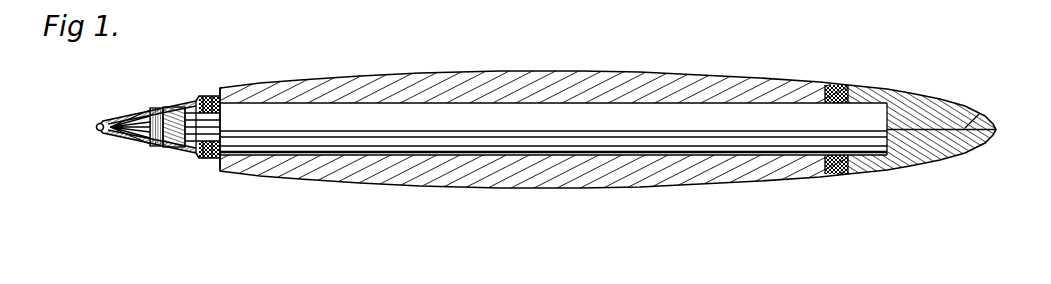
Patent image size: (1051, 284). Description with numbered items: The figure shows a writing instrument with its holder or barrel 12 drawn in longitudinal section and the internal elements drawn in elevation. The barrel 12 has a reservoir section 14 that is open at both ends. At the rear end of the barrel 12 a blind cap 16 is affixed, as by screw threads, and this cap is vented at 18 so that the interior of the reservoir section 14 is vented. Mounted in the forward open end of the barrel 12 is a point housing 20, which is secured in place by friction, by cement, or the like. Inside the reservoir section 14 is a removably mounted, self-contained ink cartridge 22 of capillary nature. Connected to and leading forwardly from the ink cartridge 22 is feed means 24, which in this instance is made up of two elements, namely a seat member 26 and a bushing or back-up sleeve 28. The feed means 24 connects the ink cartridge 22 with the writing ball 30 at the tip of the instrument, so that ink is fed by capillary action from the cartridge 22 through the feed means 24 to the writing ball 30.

The barrel 12 is at (720, 84).
The reservoir section 14 is at (342, 109).
The blind cap 16 is at (918, 112).
The vent 18 is at (988, 98).
The point housing 20 is at (192, 153).
The ink cartridge 22 is at (441, 137).
The feed means 24 is at (136, 118).
The seat member 26 is at (138, 143).
The bushing or back-up sleeve 28 is at (189, 118).
The writing ball 30 is at (97, 124).